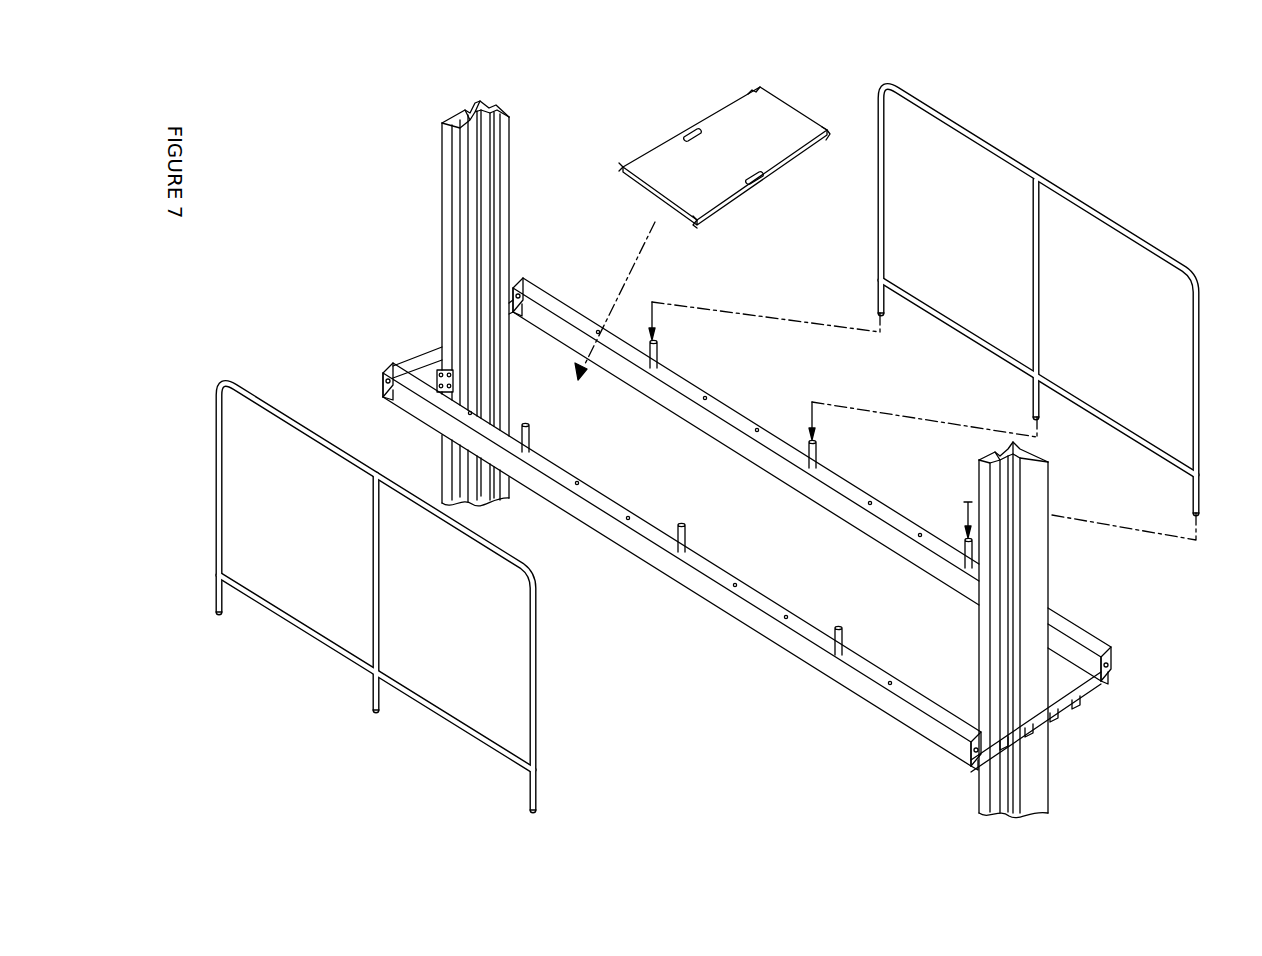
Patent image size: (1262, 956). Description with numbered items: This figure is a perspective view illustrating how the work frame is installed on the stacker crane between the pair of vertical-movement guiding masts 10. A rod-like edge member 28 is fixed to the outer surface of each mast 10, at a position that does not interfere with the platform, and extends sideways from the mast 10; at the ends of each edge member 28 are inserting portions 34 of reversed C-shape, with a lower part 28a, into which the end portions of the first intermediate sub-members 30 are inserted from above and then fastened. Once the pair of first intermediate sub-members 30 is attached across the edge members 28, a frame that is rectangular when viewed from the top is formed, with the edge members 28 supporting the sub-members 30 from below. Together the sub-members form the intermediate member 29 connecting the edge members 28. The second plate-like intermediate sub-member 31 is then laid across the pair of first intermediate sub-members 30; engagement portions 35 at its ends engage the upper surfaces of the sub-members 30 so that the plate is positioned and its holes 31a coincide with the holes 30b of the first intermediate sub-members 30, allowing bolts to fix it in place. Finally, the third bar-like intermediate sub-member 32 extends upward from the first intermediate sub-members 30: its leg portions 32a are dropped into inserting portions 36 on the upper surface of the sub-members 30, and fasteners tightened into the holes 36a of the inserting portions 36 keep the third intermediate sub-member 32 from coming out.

The vertical-movement guiding mast 10 is at (450, 185).
The edge member 28 is at (432, 345).
The bracket hook portion 28a is at (522, 312).
The intermediate member 29 is at (730, 436).
The first intermediate sub-member 30 is at (747, 522).
The hole 30b is at (628, 521).
The second intermediate sub-member 31 is at (716, 220).
The hole 31a is at (792, 112).
The third intermediate sub-member 32 is at (730, 448).
The leg portion 32a is at (878, 300).
The inserting portion 34 is at (520, 280).
The engagement portion 35 is at (752, 92).
The inserting portion 36 is at (660, 352).
The hole 36a is at (653, 370).